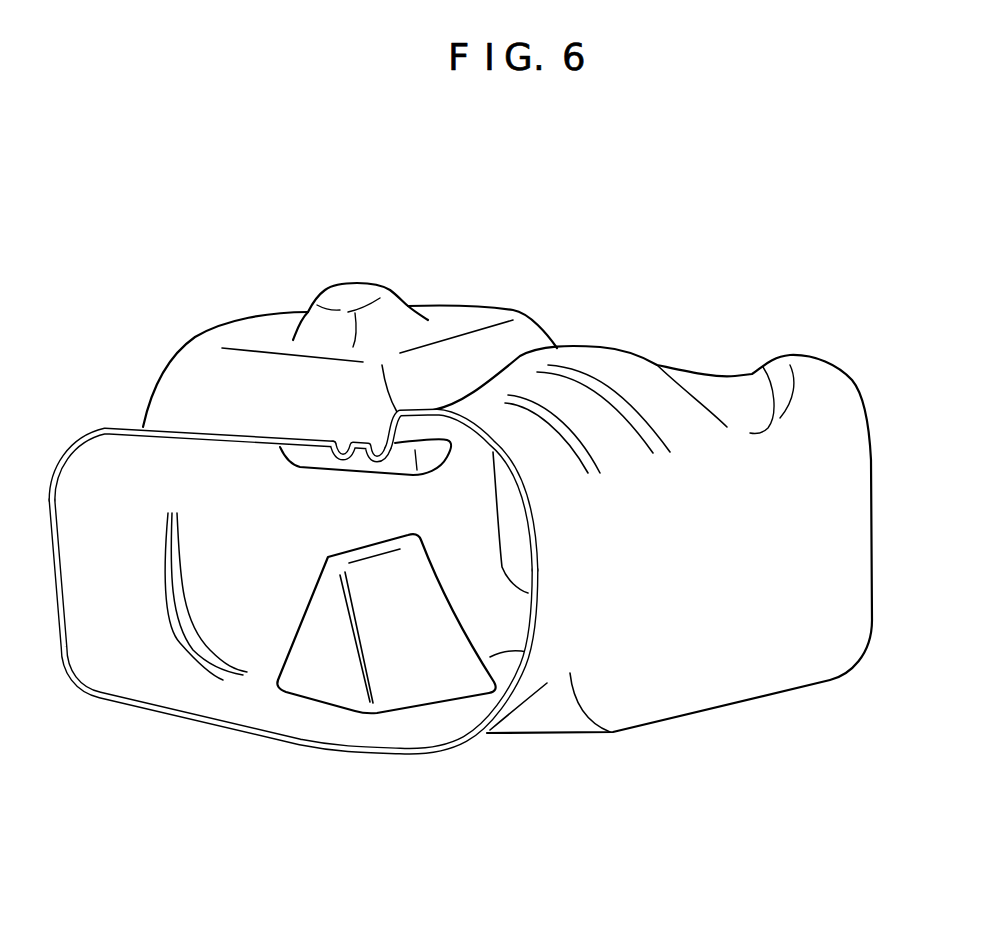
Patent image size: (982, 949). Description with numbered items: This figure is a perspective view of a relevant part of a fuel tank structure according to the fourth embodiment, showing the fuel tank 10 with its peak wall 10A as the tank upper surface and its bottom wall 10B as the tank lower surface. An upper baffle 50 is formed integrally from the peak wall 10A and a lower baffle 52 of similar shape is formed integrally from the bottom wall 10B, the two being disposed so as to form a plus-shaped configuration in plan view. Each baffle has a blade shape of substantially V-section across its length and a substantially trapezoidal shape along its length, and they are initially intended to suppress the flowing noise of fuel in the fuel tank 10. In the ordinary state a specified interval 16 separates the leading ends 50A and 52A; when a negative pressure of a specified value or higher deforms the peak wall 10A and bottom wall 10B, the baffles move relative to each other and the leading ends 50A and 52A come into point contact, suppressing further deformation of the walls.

The fuel tank 10 is at (667, 357).
The peak wall 10A is at (175, 433).
The bottom wall 10B is at (237, 731).
The specified interval 16 is at (372, 523).
The upper baffle 50 is at (294, 459).
The leading end of upper baffle 50A is at (316, 472).
The lower baffle 52 is at (309, 602).
The leading end of lower baffle 52A is at (393, 533).